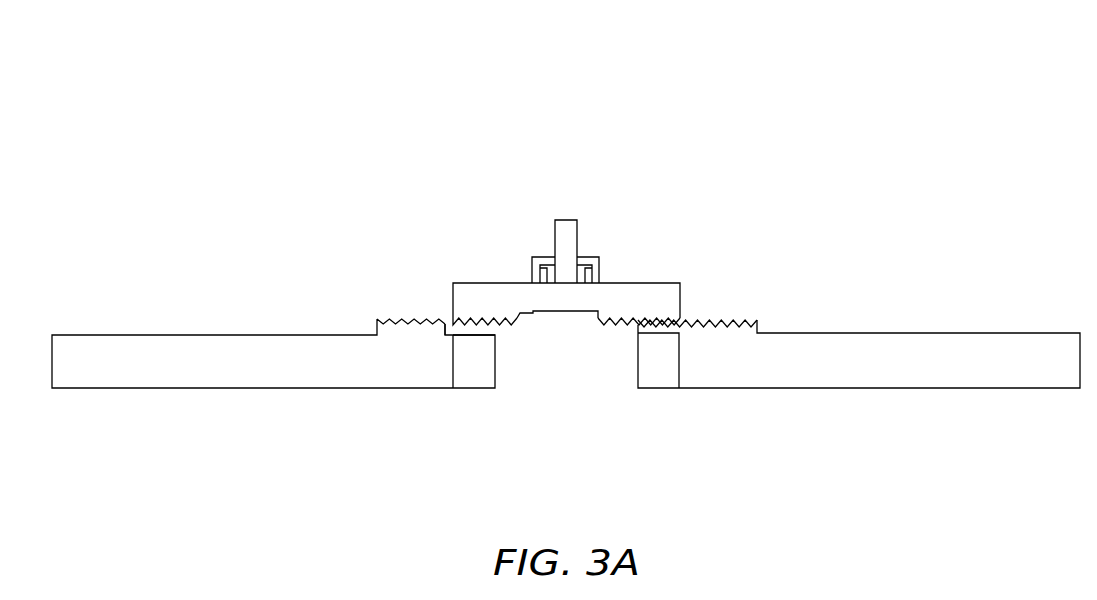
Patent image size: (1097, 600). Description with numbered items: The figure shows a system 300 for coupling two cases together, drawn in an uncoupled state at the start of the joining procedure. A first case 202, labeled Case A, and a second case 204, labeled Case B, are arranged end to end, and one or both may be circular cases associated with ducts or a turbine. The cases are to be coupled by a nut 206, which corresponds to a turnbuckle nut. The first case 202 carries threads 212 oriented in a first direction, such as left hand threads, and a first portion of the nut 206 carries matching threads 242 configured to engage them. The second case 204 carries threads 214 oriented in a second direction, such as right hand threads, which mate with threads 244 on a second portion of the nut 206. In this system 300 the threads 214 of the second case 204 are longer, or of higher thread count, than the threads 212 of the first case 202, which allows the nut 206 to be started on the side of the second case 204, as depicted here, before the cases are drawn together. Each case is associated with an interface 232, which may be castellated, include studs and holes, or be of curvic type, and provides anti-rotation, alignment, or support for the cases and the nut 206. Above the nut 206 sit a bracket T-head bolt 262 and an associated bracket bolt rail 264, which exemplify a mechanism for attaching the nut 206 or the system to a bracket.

The system 300 is at (850, 109).
The first case 202 is at (138, 370).
The second case 204 is at (963, 370).
The nut 206 is at (493, 282).
The threads 212 is at (412, 318).
The threads 214 is at (715, 318).
The interface 232 is at (470, 372).
The threads 242 is at (512, 324).
The threads 244 is at (670, 320).
The bracket T-head bolt 262 is at (562, 220).
The bracket bolt rail 264 is at (588, 258).